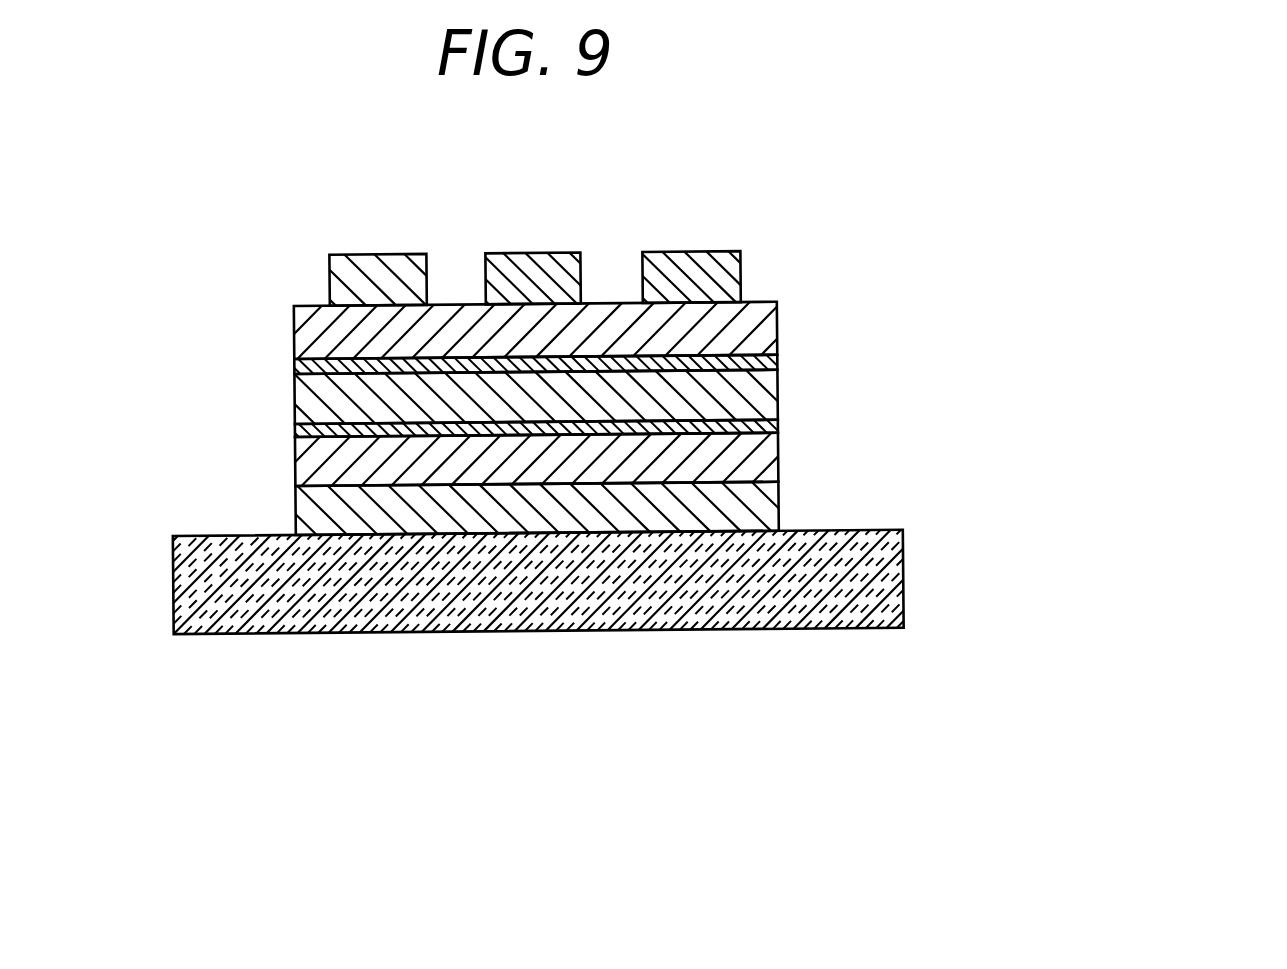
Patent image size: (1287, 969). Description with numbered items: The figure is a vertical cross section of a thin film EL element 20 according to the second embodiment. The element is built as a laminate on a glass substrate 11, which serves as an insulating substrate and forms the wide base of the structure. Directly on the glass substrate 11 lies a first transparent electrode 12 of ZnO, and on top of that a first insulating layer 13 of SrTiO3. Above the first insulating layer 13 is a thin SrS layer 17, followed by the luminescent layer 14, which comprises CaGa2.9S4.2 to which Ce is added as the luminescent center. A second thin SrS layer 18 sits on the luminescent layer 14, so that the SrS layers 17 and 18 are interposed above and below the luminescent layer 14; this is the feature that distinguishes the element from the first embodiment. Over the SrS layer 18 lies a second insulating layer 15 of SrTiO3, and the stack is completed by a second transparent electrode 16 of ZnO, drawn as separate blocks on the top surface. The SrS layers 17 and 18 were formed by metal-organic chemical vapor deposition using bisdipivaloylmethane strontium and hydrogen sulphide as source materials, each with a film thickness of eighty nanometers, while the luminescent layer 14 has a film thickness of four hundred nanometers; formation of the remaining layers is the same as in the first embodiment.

The thin film EL element 20 is at (739, 171).
The glass substrate 11 is at (892, 570).
The first transparent electrode 12 is at (767, 513).
The first insulating layer 13 is at (767, 458).
The luminescent layer 14 is at (767, 402).
The second insulating layer 15 is at (762, 337).
The second transparent electrode 16 is at (742, 284).
The SrS layer 17 is at (296, 430).
The SrS layer 18 is at (296, 368).